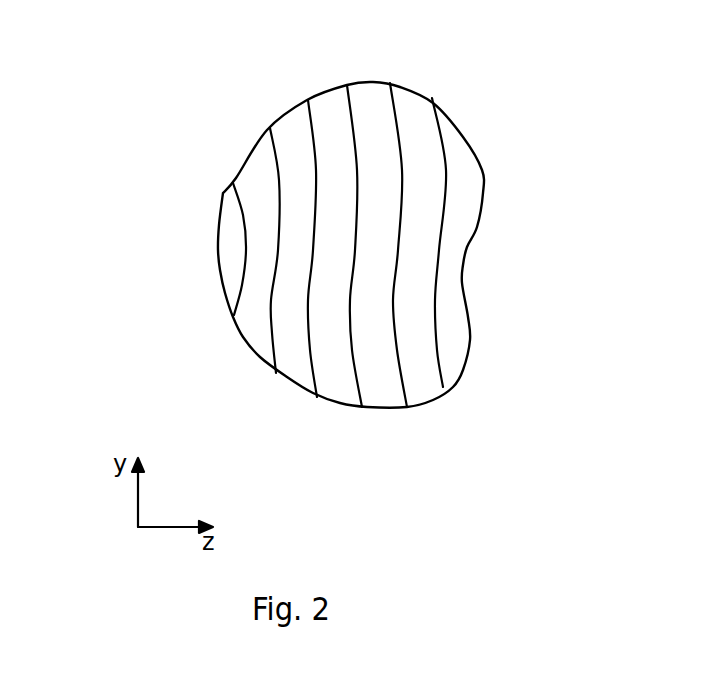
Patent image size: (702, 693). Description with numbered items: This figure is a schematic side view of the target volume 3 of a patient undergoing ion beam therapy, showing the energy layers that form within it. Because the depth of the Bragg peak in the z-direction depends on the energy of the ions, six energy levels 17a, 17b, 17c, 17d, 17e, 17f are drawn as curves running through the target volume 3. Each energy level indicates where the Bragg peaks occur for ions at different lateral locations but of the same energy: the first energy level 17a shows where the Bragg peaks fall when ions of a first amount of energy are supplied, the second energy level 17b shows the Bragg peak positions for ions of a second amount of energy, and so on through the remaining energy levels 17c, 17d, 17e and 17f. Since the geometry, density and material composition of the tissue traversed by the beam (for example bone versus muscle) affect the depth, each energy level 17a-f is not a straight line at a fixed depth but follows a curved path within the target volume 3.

The target volume 3 is at (415, 100).
The first energy level 17a is at (233, 318).
The second energy level 17b is at (276, 373).
The third energy level 17c is at (317, 397).
The fourth energy level 17d is at (362, 407).
The fifth energy level 17e is at (407, 407).
The sixth energy level 17f is at (446, 387).